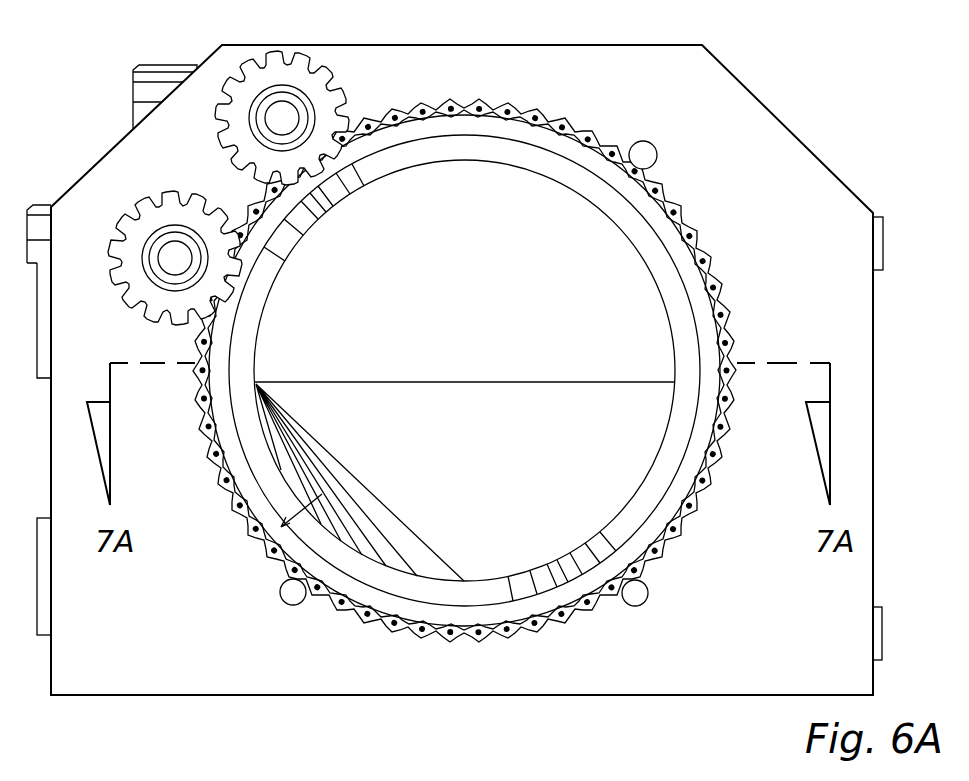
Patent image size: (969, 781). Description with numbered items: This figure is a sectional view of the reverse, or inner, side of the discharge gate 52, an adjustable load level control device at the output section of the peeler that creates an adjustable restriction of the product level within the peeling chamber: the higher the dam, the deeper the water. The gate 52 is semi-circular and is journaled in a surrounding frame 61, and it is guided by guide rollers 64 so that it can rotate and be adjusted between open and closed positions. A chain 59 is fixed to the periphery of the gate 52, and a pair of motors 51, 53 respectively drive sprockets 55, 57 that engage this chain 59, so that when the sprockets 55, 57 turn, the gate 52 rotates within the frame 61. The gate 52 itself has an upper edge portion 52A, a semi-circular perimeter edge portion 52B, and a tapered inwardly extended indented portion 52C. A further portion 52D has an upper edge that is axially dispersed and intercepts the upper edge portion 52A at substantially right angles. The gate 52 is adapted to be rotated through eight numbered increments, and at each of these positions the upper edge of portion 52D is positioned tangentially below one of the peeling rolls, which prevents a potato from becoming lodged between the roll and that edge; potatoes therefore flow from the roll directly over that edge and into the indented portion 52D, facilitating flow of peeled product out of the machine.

The motor 51 is at (40, 205).
The discharge gate 52 is at (460, 463).
The upper edge portion 52A is at (632, 382).
The semi-circular perimeter edge portion 52B is at (640, 490).
The tapered inwardly extended indented portion 52C is at (322, 494).
The indented portion 52D is at (357, 513).
The motor 53 is at (147, 65).
The sprocket 55 is at (135, 228).
The sprocket 57 is at (318, 73).
The chain 59 is at (560, 112).
The frame 61 is at (778, 216).
The guide rollers 64 is at (637, 597).